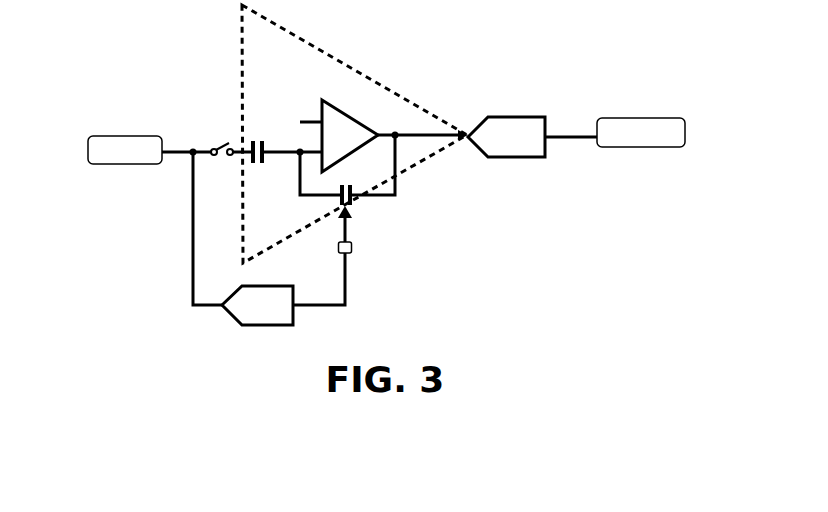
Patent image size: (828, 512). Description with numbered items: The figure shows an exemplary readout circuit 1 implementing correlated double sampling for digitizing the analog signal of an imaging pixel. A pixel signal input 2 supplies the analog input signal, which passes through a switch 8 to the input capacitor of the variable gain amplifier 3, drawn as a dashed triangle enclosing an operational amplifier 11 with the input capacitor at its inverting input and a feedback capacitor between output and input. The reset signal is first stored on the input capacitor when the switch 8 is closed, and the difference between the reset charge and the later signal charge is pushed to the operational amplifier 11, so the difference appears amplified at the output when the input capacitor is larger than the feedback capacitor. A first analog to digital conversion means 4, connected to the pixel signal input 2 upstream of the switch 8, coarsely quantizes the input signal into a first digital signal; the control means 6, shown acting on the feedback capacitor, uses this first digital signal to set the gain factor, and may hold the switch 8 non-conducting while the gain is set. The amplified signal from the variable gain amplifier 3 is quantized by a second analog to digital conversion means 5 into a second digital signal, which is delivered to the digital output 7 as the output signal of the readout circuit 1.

The readout circuit 1 is at (387, 190).
The pixel signal input 2 is at (120, 163).
The variable gain amplifier 3 is at (363, 78).
The first analog to digital conversion means 4 is at (233, 320).
The second analog to digital conversion means 5 is at (508, 157).
The control means 6 is at (347, 255).
The digital output 7 is at (663, 117).
The switch 8 is at (228, 145).
The operational amplifier 11 is at (360, 122).